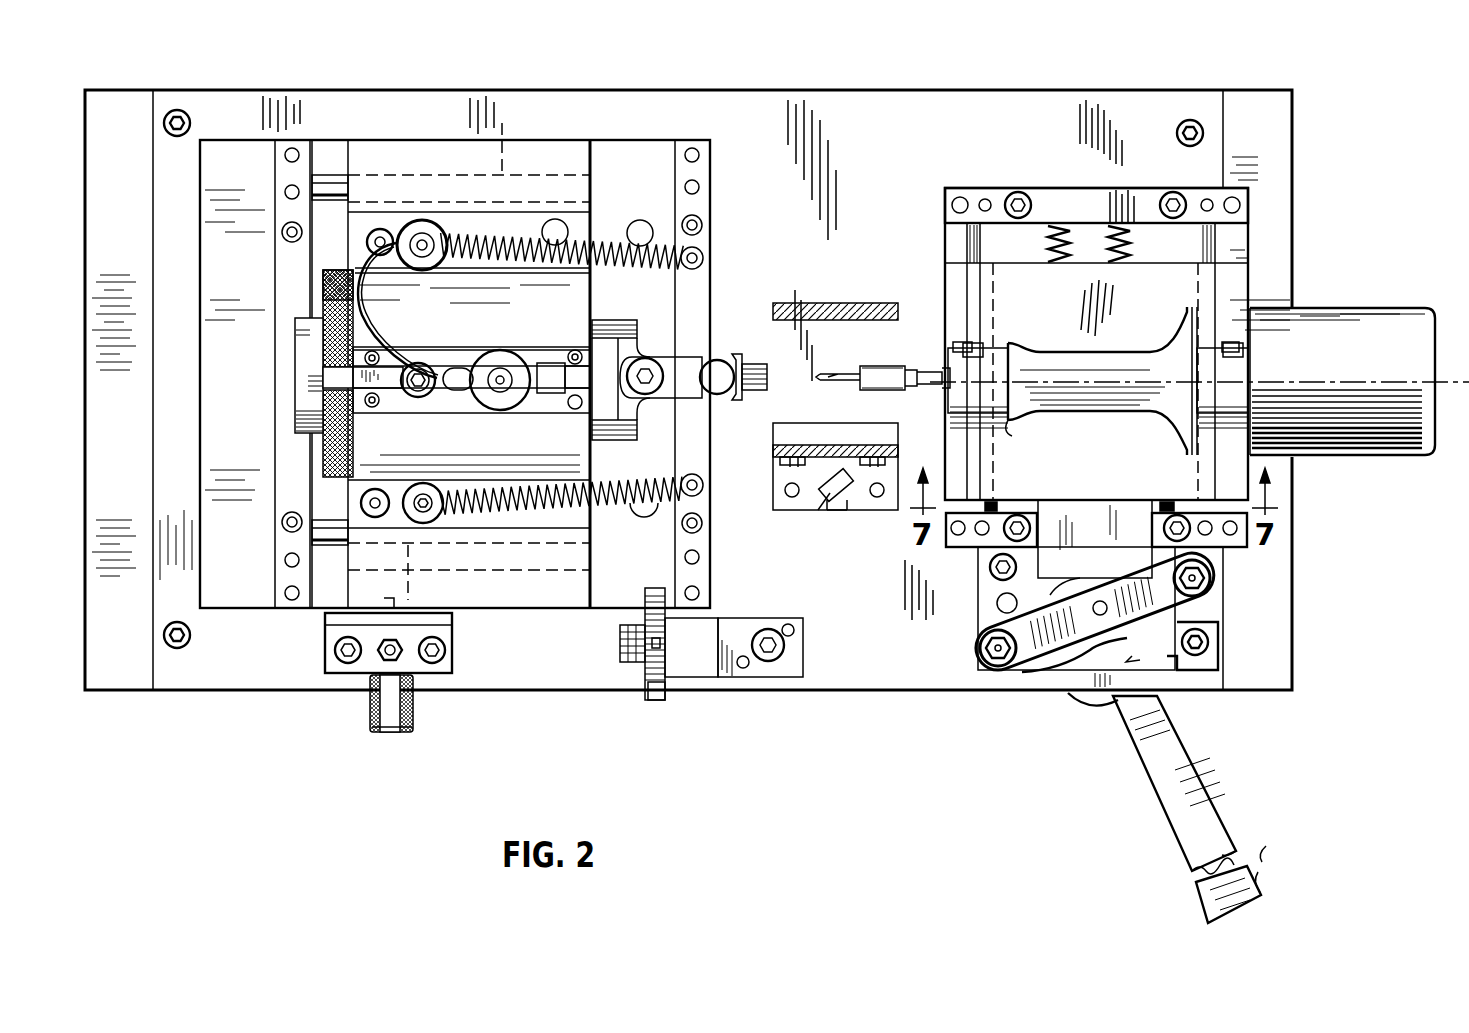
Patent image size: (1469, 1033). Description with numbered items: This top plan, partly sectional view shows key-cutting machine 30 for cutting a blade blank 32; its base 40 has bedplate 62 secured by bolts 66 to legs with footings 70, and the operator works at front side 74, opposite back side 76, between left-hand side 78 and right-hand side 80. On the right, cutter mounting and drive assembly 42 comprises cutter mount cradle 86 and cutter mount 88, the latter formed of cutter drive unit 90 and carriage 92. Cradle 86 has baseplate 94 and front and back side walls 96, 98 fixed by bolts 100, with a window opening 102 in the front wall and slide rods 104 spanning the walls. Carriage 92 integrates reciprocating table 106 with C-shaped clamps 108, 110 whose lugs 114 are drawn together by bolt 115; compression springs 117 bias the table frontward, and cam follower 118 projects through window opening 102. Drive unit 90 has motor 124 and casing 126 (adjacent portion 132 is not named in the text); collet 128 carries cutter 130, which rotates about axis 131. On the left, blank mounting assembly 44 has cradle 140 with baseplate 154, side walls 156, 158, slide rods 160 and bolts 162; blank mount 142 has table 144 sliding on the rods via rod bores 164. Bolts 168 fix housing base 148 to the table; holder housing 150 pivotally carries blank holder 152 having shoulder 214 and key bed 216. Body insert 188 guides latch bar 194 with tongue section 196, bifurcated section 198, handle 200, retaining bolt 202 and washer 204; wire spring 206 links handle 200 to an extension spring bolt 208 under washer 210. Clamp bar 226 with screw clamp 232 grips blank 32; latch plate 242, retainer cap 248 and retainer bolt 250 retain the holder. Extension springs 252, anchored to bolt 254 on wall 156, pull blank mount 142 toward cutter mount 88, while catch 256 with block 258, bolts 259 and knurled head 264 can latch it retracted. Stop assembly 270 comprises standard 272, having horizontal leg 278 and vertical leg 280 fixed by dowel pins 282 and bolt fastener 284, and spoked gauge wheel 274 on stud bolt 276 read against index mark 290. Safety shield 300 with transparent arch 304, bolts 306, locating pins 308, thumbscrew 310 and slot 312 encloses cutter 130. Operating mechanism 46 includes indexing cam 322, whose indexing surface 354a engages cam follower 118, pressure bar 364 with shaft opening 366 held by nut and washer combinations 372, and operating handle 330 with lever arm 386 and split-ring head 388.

The adjustment mechanism 30 is at (725, 722).
The splined shaft 32 is at (762, 364).
The apparatus 40 is at (833, 88).
The workpiece holding assembly 42 is at (1110, 120).
The carriage assembly 44 is at (440, 128).
The lever assembly 46 is at (1218, 726).
The base plate edge 62 is at (217, 690).
The mounting bolts 66 is at (183, 112).
The base plate 70 is at (135, 689).
The base plate bottom edge 74 is at (877, 692).
The base plate top edge 76 is at (683, 88).
The base plate corner 78 is at (88, 95).
The side rail 80 is at (1303, 177).
The housing 86 is at (1141, 180).
The end support 88 is at (1346, 478).
The shaft housing 90 is at (1322, 303).
The end plate 92 is at (1234, 265).
The frame 94 is at (946, 225).
The lower plate 96 is at (968, 548).
The side strip 98 is at (955, 152).
The bolts 100 is at (1020, 192).
The holes 102 is at (1000, 512).
The clamp plates 104 is at (948, 248).
The stanchion 106 is at (1033, 250).
The left bearing 108 is at (985, 292).
The right bearing 110 is at (1192, 288).
The bearing blocks 114 is at (992, 400).
The keys 115 is at (972, 342).
The springs 117 is at (1068, 240).
The center block 118 is at (1068, 532).
The handle shaft 124 is at (1412, 306).
The spool 126 is at (1092, 413).
The chuck 128 is at (895, 365).
The drill bit 130 is at (823, 374).
The axis 131 is at (1366, 388).
The hub 132 is at (1012, 432).
The carriage 140 is at (188, 330).
The slide block 142 is at (318, 484).
The carriage body 144 is at (522, 622).
The guide rails 148 is at (375, 226).
The hatched block 150 is at (322, 303).
The coupling block 152 is at (621, 320).
The side plate 154 is at (200, 215).
The right end plate 156 is at (712, 182).
The left end plate 158 is at (275, 172).
The guide strip 160 is at (318, 174).
The screws 162 is at (283, 236).
The hidden slot 164 is at (510, 128).
The rollers 168 is at (367, 242).
The end block 188 is at (548, 395).
The rod 194 is at (298, 412).
The slide 196 is at (375, 410).
The bolt 198 is at (422, 398).
The slot 200 is at (462, 398).
The pulley shaft 202 is at (504, 374).
The pulley 204 is at (488, 358).
The cable 206 is at (380, 345).
The pulley 208 is at (436, 243).
The pulley 210 is at (420, 238).
The flange 214 is at (616, 440).
The coupling 216 is at (666, 398).
The coupling arm 226 is at (718, 360).
The bolt 232 is at (662, 366).
The knob 242 is at (297, 325).
The collar 248 is at (298, 368).
The nut 250 is at (298, 400).
The springs 252 is at (520, 236).
The rollers 254 is at (702, 253).
The adjusting screw assembly 256 is at (382, 770).
The block 258 is at (436, 680).
The screws 259 is at (335, 652).
The knurled knob 264 is at (372, 700).
The rack 270 is at (644, 712).
The stop 272 is at (816, 626).
The pinion 274 is at (640, 678).
The knob 276 is at (619, 643).
The block 278 is at (766, 678).
The block 280 is at (706, 630).
The holes 282 is at (805, 641).
The bolt 284 is at (770, 628).
The set screw 290 is at (674, 646).
The cutter assembly 300 is at (855, 278).
The blades 304 is at (778, 302).
The holder 306 is at (790, 476).
The holes 308 is at (884, 488).
The slot 310 is at (828, 512).
The cam 312 is at (840, 504).
The stop block 322 is at (1222, 678).
The handle end 330 is at (1243, 810).
The arm 354a is at (1050, 592).
The lever 364 is at (1050, 680).
The hole 366 is at (1106, 608).
The pivot bolts 372 is at (1211, 577).
The handle 386 is at (1160, 797).
The arc 388 is at (1085, 702).